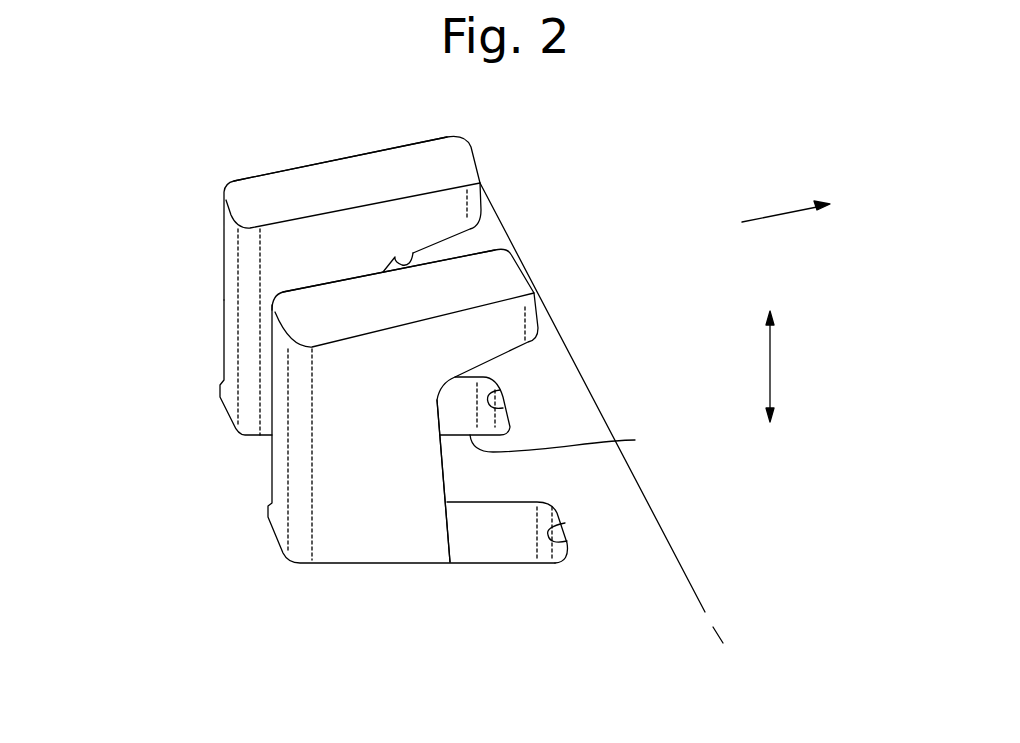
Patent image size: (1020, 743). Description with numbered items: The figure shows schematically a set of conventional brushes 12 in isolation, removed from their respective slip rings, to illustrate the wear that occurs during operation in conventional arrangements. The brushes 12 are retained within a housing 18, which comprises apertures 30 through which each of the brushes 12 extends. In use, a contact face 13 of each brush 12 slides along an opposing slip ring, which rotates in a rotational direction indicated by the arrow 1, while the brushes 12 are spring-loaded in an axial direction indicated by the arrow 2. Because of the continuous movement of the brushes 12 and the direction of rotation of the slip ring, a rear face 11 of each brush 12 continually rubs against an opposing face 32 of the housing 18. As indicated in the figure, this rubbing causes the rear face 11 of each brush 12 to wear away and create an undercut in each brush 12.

The arrow indicating rotational direction 1 is at (783, 211).
The arrow indicating axial direction 2 is at (770, 363).
The rear face 11 is at (412, 256).
The brush 12 is at (245, 203).
The contact face 13 is at (345, 188).
The housing 18 is at (650, 511).
The aperture 30 is at (512, 606).
The opposing face 32 is at (500, 390).